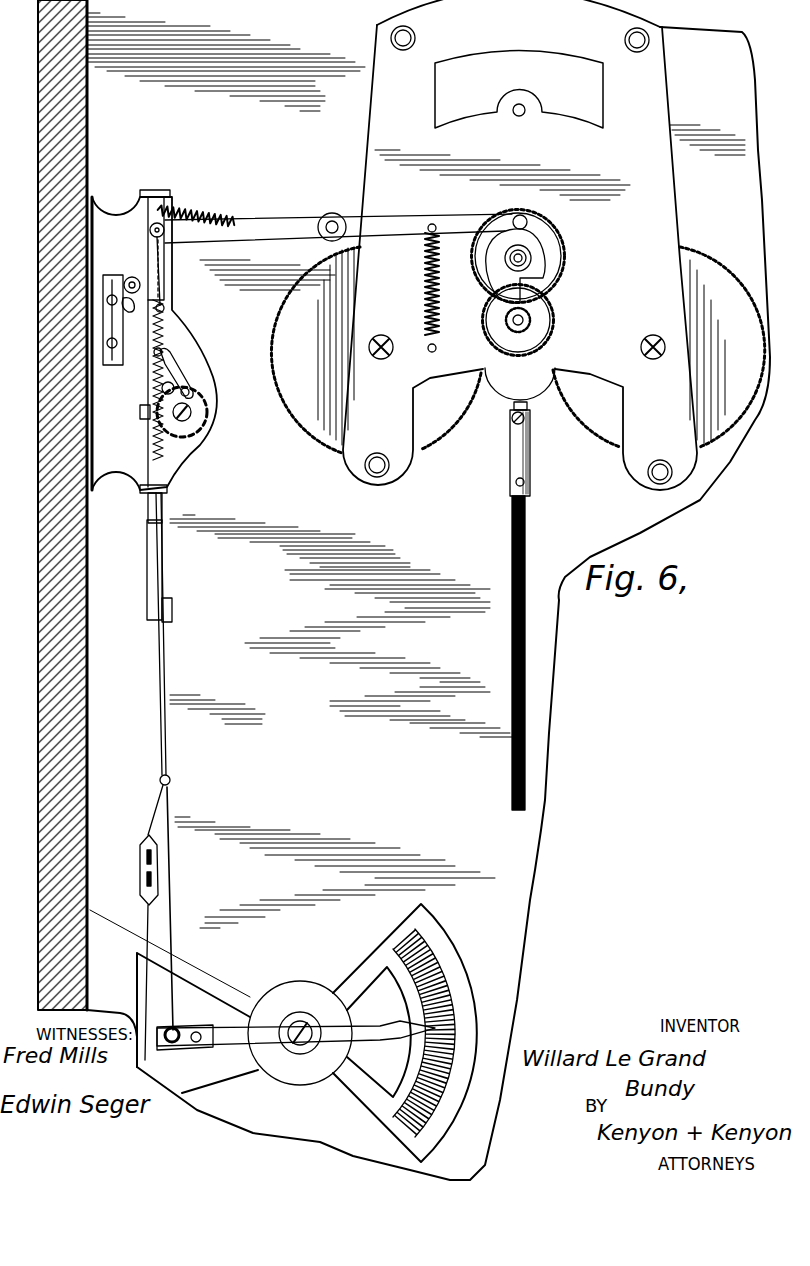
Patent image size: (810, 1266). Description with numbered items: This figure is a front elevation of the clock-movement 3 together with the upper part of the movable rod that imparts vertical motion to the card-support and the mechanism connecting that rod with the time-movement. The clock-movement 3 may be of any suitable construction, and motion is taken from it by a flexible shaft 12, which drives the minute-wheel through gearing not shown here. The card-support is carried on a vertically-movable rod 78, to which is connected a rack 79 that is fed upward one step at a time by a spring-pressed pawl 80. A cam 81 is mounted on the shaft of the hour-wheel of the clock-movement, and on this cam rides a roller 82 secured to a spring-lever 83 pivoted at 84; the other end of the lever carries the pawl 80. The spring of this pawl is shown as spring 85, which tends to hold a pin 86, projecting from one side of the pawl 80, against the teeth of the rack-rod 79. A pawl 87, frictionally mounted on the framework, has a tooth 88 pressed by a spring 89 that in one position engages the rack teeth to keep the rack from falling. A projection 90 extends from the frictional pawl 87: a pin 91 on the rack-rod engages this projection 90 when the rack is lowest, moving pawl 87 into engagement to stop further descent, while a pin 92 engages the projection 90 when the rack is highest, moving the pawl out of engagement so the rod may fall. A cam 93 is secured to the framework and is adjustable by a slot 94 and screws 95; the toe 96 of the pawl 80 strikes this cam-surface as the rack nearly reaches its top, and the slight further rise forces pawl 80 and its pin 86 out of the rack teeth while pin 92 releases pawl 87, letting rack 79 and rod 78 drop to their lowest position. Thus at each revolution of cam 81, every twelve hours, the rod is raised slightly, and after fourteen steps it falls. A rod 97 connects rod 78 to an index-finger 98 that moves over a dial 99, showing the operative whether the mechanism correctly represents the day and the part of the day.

The clock-movement 3 is at (660, 248).
The flexible shaft 12 is at (528, 557).
The vertically-movable rod 78 is at (161, 670).
The rack 79 is at (161, 555).
The spring-pressed pawl 80 is at (165, 275).
The cam 81 is at (543, 257).
The roller 82 is at (523, 217).
The spring-lever 83 is at (417, 218).
The pivot 84 is at (333, 213).
The spring 85 is at (190, 205).
The pin 86 is at (165, 308).
The frictional pawl 87 is at (205, 400).
The tooth 88 is at (160, 352).
The spring 89 is at (185, 385).
The projection 90 is at (143, 417).
The pin 91 is at (155, 325).
The pin 92 is at (150, 500).
The cam 93 is at (132, 280).
The slot 94 is at (110, 335).
The screws 95 is at (110, 273).
The toe 96 is at (130, 314).
The rod 97 is at (171, 890).
The index-finger 98 is at (365, 1027).
The dial 99 is at (467, 963).